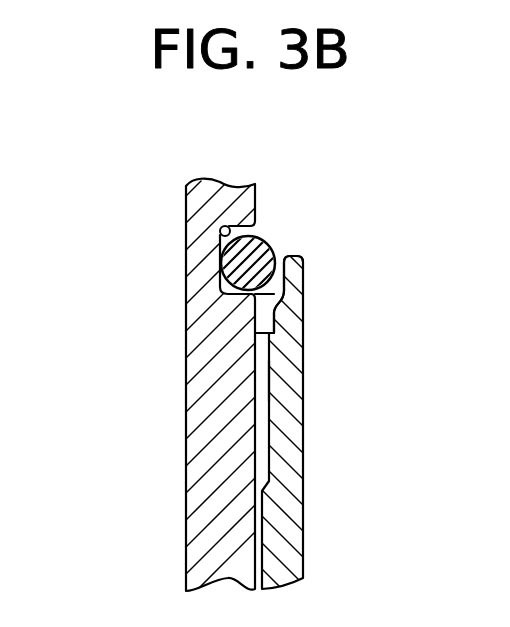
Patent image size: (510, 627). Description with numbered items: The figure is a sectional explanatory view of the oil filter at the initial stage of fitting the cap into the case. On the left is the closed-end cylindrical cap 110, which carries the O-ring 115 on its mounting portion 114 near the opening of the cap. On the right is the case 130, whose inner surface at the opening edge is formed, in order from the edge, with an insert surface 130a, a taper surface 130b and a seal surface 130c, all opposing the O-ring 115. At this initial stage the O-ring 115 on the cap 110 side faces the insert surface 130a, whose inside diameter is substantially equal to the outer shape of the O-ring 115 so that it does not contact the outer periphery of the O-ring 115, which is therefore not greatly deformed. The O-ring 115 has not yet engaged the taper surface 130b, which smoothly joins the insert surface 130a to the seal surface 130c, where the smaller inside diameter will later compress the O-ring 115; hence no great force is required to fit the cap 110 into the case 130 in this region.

The cap 110 is at (205, 457).
The mounting portion 114 is at (220, 228).
The O-ring 115 is at (245, 268).
The case 130 is at (288, 392).
The insert surface 130a is at (282, 258).
The taper surface 130b is at (288, 290).
The seal surface 130c is at (271, 386).